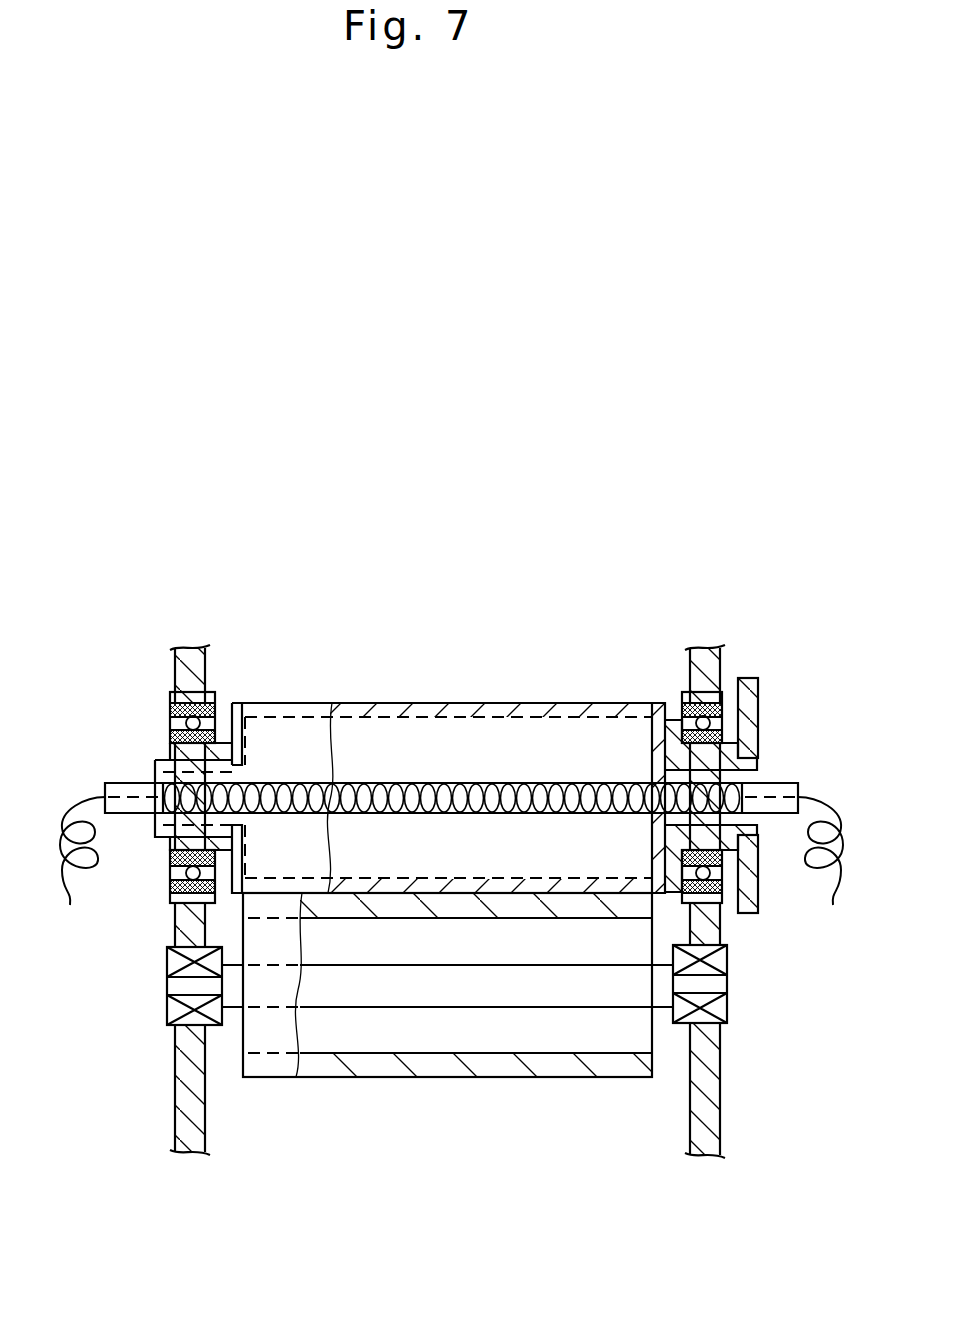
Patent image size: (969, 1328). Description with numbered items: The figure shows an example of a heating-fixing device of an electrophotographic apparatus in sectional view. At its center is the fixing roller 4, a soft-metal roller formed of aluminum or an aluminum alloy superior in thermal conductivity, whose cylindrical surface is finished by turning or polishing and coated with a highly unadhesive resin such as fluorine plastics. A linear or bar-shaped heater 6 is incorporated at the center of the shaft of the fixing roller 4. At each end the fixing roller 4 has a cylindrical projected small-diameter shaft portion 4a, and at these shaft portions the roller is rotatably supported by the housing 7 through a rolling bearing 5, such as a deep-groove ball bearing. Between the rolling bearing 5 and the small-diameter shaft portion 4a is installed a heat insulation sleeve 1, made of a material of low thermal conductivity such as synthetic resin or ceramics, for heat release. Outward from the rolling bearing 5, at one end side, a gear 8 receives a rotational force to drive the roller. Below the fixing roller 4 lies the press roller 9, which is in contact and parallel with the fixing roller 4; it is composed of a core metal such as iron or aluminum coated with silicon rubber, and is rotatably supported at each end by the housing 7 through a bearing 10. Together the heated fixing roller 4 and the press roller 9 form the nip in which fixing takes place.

The heat insulation sleeve 1 is at (675, 733).
The fixing roller 4 is at (405, 708).
The small-diameter shaft portion 4a is at (148, 775).
The rolling bearing 5 is at (172, 733).
The heater 6 is at (477, 783).
The housing 7 is at (197, 672).
The gear 8 is at (757, 725).
The press roller 9 is at (478, 1080).
The bearing 10 is at (180, 992).